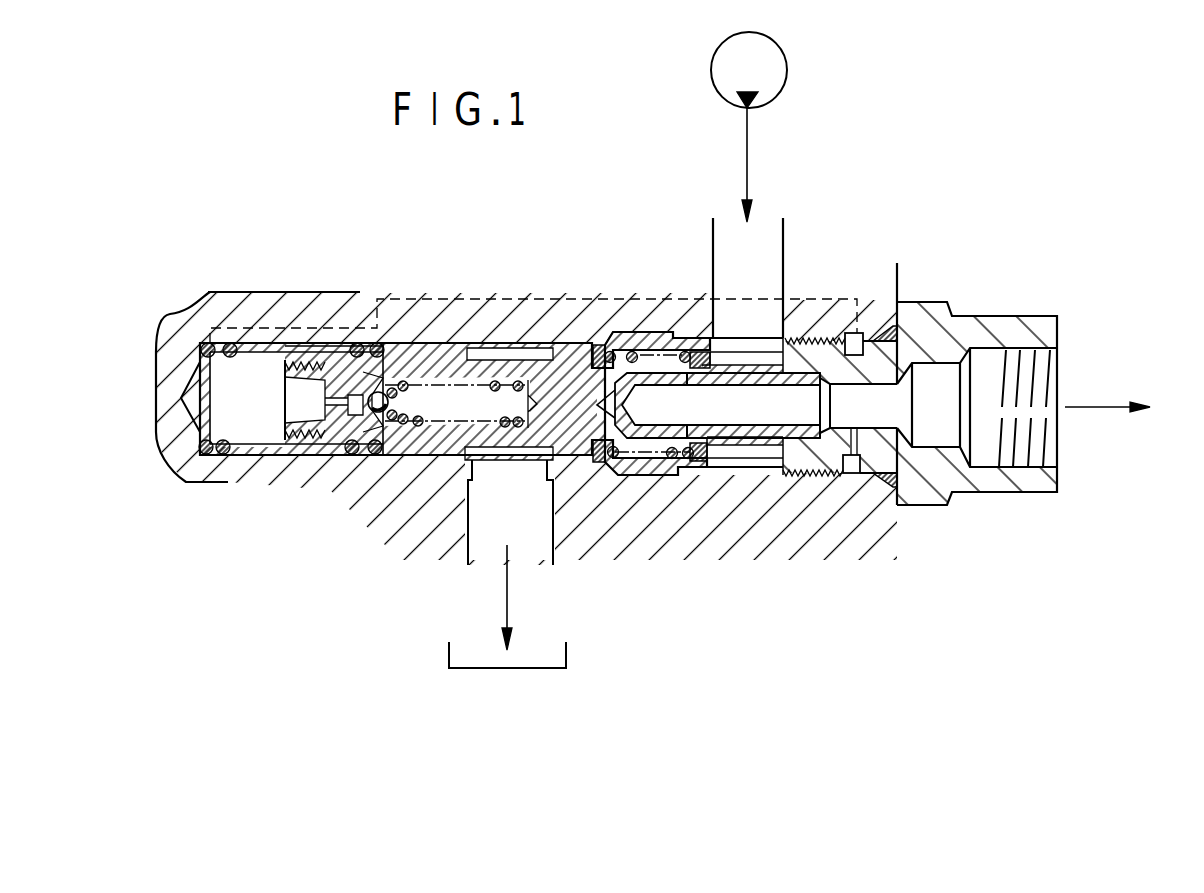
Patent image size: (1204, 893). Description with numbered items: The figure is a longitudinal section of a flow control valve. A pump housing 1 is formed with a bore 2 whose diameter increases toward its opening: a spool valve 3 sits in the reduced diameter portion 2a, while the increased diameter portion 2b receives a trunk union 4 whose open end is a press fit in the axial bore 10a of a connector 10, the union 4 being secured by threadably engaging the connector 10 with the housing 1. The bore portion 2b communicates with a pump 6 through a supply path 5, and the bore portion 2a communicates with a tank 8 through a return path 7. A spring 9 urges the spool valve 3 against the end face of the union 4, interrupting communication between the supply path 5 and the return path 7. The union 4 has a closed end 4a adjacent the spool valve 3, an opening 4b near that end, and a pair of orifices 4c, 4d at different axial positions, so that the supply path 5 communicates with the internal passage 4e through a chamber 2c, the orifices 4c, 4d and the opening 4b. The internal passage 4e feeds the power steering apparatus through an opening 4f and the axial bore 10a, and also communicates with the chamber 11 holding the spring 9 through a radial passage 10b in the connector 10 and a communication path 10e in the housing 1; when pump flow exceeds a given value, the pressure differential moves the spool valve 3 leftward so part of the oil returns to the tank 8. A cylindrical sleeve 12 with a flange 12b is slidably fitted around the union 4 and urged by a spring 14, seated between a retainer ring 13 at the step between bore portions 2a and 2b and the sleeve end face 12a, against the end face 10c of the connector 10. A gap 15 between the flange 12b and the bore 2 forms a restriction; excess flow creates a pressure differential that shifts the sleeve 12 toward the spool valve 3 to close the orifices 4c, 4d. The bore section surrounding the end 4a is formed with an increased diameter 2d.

The pump housing 1 is at (873, 290).
The bore 2 is at (440, 456).
The reduced diameter bore portion 2a is at (262, 447).
The increased diameter bore portion 2b is at (700, 470).
The chamber 2c is at (640, 338).
The increased diameter section 2d is at (624, 470).
The spool valve 3 is at (400, 456).
The trunk union 4 is at (755, 449).
The closed end 4a is at (597, 405).
The opening 4b is at (611, 336).
The orifice 4c is at (686, 432).
The orifice 4d is at (694, 374).
The internal passage 4e is at (765, 426).
The opening 4f is at (818, 440).
The supply path 5 is at (783, 240).
The pump 6 is at (787, 72).
The return path 7 is at (470, 512).
The tank 8 is at (449, 648).
The spring 9 is at (232, 452).
The connector 10 is at (973, 335).
The axial bore 10a is at (900, 418).
The radial passage 10b is at (853, 474).
The end face 10c is at (778, 339).
The communication path 10e is at (509, 299).
The chamber 11 is at (243, 378).
The cylindrical sleeve 12 is at (735, 451).
The end face 12a is at (700, 352).
The flange 12b is at (713, 462).
The retainer ring 13 is at (595, 345).
The spring 14 is at (672, 460).
The gap 15 is at (715, 343).